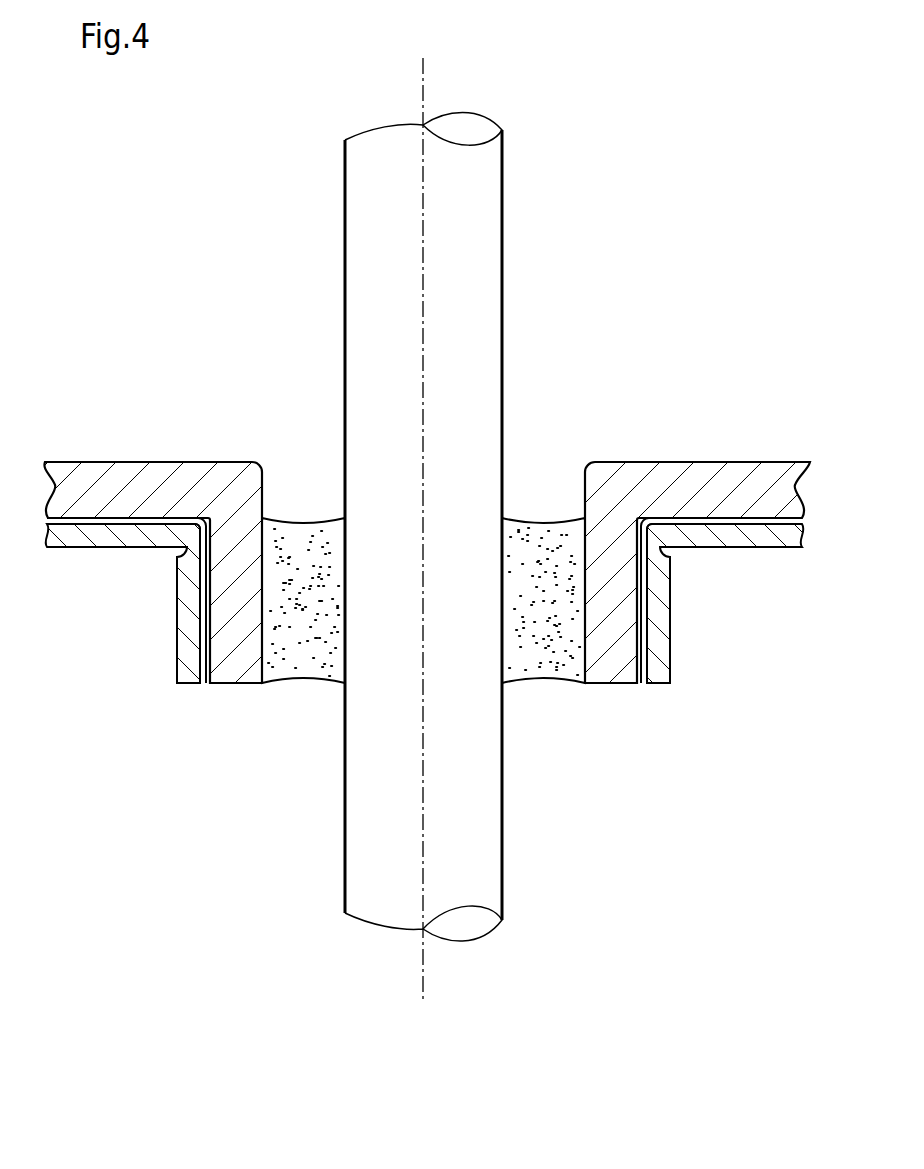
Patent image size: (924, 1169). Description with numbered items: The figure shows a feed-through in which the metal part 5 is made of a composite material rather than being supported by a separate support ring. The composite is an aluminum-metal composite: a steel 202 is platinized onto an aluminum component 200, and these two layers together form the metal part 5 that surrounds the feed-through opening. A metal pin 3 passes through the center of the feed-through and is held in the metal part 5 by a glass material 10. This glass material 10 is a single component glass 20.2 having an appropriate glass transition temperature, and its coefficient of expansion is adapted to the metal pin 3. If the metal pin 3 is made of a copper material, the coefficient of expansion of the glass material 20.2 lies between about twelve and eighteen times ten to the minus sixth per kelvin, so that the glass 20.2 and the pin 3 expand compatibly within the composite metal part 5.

The metal pin 3 is at (490, 256).
The metal part 5 is at (656, 480).
The aluminum component 200 is at (754, 480).
The steel 202 is at (750, 530).
The single component glass 20.2 is at (537, 548).
The glass material 10 is at (423, 605).